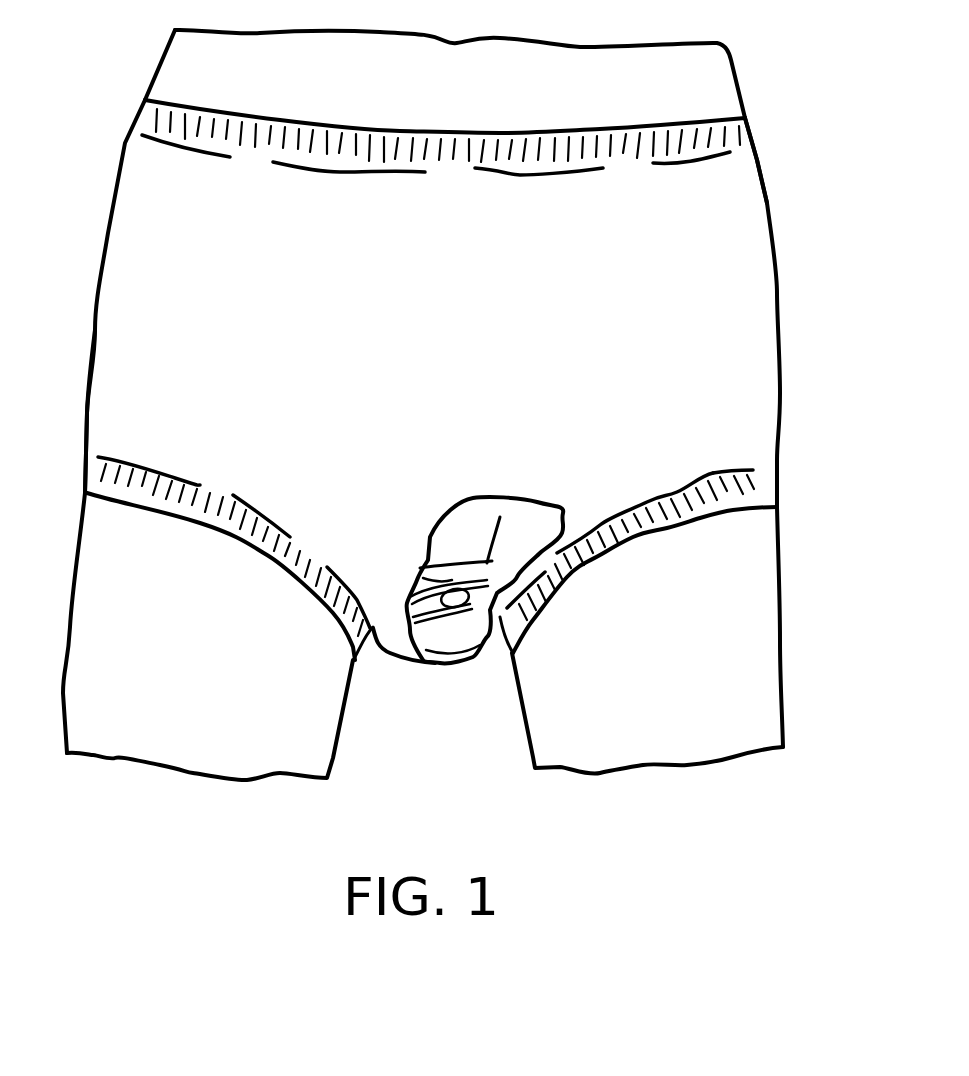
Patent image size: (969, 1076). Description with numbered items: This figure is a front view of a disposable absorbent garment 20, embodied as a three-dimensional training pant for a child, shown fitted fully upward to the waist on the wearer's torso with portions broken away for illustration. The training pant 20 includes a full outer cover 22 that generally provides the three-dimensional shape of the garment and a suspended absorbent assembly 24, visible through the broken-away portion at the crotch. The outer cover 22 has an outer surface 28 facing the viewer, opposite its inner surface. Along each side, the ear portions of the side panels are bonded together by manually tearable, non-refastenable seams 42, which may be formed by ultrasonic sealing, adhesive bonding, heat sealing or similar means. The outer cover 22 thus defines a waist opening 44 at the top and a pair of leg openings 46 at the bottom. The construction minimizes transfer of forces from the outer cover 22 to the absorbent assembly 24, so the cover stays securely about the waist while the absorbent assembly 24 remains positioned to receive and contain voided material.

The disposable absorbent garment 20 is at (437, 405).
The outer cover 22 is at (161, 292).
The suspended absorbent assembly 24 is at (452, 624).
The outer surface 28 is at (704, 279).
The seams 42 is at (86, 413).
The waist opening 44 is at (695, 122).
The leg openings 46 is at (198, 522).